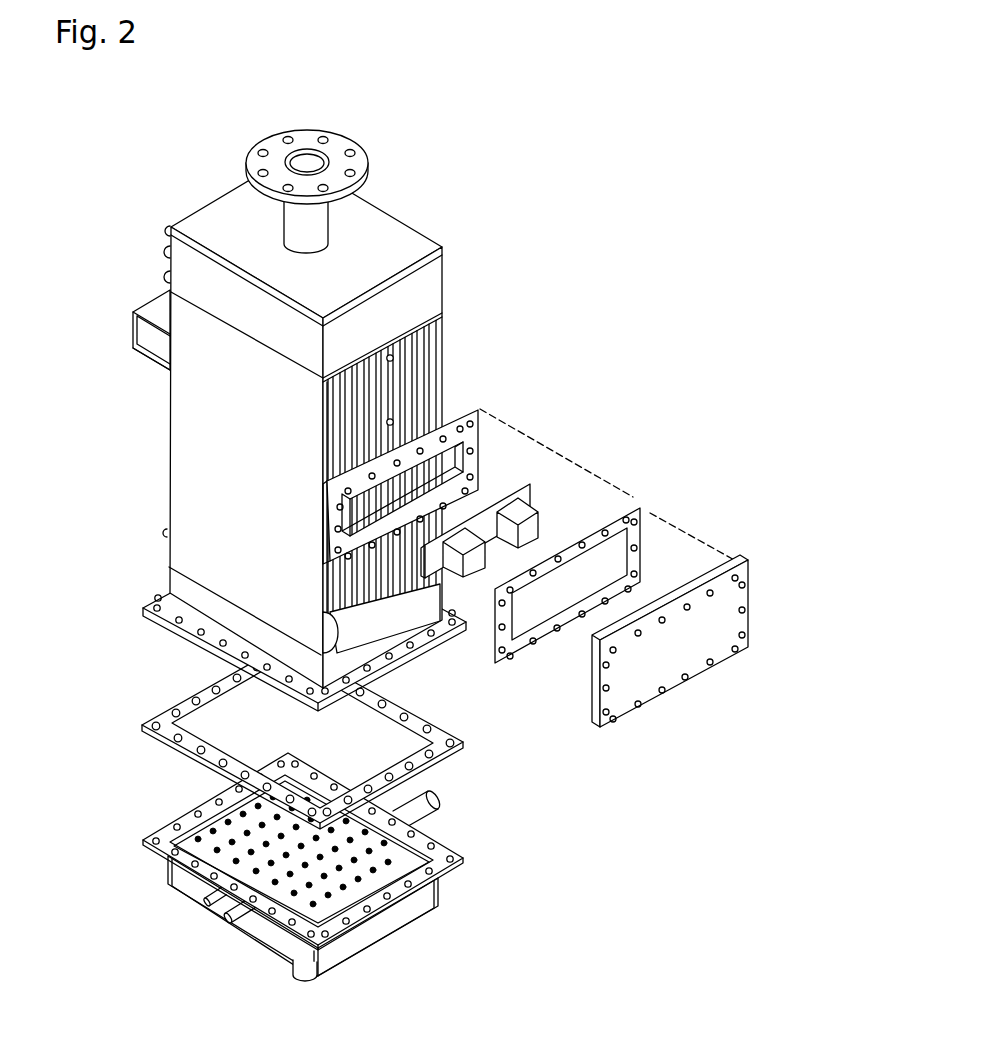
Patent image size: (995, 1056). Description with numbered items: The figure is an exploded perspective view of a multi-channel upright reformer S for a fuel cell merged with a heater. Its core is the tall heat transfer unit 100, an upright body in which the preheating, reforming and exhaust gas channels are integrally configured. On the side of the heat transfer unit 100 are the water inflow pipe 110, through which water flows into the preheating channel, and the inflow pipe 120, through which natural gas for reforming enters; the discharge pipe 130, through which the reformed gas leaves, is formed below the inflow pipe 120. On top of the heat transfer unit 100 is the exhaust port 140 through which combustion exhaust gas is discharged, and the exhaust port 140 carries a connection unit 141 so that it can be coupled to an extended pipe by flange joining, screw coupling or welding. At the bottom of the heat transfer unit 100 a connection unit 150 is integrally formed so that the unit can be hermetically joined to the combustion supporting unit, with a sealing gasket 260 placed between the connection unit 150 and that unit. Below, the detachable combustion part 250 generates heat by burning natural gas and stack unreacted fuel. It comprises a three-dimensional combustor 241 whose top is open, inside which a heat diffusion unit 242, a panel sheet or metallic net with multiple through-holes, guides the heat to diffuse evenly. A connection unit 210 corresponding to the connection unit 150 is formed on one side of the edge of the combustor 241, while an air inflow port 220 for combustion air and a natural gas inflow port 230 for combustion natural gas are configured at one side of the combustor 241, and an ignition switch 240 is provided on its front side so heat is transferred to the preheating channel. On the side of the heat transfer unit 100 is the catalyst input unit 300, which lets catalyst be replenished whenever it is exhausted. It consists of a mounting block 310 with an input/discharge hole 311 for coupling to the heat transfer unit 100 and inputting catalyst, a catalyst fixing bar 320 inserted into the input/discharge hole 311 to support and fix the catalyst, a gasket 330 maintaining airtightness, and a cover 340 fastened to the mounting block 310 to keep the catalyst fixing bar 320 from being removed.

The multi-channel upright reformer S is at (551, 135).
The heat transfer unit 100 is at (180, 420).
The water inflow pipe 110 is at (170, 228).
The inflow pipe 120 is at (165, 252).
The discharge pipe 130 is at (163, 277).
The exhaust port 140 is at (304, 163).
The connection unit 141 is at (363, 155).
The connection unit 150 is at (147, 604).
The connection unit 210 is at (141, 840).
The air inflow port 220 is at (433, 795).
The natural gas inflow port 230 is at (290, 972).
The ignition switch 240 is at (208, 902).
The combustor 241 is at (385, 923).
The heat diffusion unit 242 is at (227, 842).
The combustion part 250 is at (512, 874).
The sealing gasket 260 is at (143, 724).
The catalyst input unit 300 is at (649, 377).
The mounting block 310 is at (477, 410).
The input/discharge hole 311 is at (448, 455).
The catalyst fixing bar 320 is at (528, 513).
The gasket 330 is at (630, 508).
The cover 340 is at (667, 680).